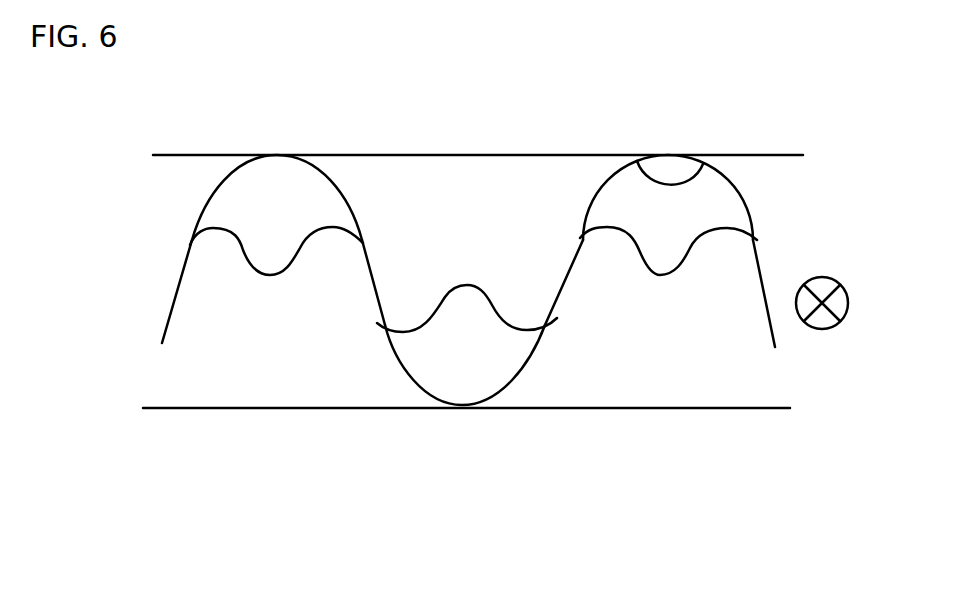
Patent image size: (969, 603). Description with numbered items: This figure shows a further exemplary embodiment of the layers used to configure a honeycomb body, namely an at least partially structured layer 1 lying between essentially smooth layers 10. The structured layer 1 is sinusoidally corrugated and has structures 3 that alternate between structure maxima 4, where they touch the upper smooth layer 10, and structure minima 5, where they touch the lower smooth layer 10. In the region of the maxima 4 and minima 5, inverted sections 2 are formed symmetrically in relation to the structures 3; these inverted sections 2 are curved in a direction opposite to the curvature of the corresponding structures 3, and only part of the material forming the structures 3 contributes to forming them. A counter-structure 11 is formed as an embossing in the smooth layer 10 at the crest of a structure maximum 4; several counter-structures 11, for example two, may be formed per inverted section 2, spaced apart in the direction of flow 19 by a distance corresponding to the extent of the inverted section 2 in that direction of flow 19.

The layer that is at least partially structured 1 is at (417, 290).
The inverted section 2 is at (485, 287).
The structure 3 is at (348, 185).
The structure maximum 4 is at (277, 153).
The structure minimum 5 is at (458, 407).
The layer that is essentially smooth 10 is at (188, 155).
The counter-structure 11 is at (683, 180).
The direction of flow 19 is at (825, 330).